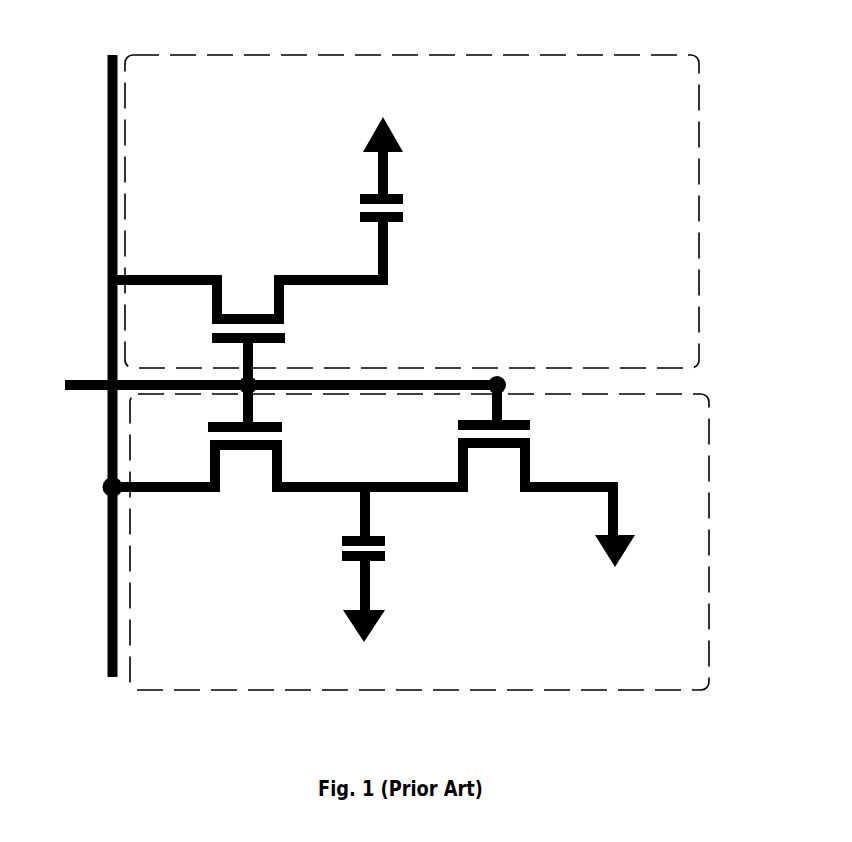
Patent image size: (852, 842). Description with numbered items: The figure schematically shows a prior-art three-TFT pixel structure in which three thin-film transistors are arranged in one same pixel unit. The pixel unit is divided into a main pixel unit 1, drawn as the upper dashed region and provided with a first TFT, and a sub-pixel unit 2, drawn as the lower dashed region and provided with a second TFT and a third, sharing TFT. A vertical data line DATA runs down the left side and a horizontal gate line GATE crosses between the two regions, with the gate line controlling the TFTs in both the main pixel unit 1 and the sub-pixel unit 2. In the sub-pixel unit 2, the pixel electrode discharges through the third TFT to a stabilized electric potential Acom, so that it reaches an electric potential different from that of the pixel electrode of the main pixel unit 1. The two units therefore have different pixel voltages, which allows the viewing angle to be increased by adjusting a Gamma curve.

The main pixel unit 1 is at (454, 224).
The sub-pixel unit 2 is at (431, 533).
The data line DATA is at (110, 347).
The gate line GATE is at (254, 366).
The Acom electric potential Acom is at (637, 580).